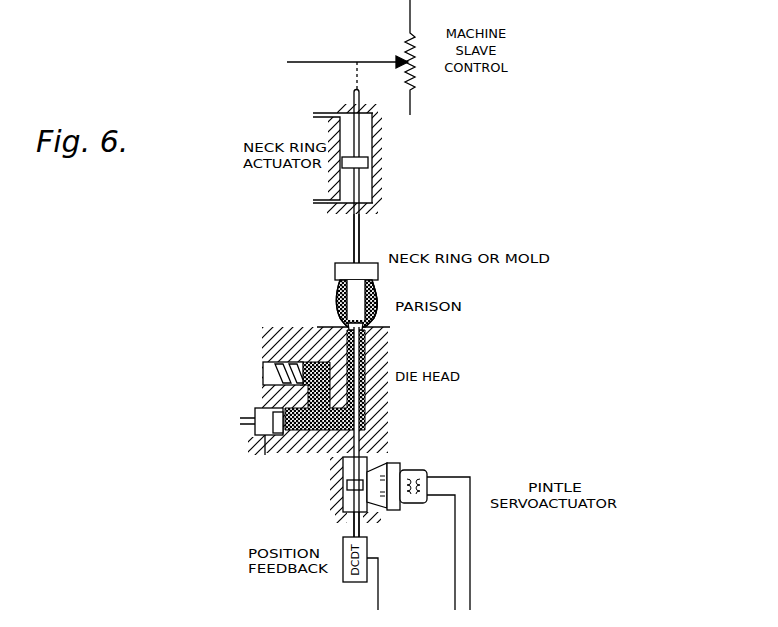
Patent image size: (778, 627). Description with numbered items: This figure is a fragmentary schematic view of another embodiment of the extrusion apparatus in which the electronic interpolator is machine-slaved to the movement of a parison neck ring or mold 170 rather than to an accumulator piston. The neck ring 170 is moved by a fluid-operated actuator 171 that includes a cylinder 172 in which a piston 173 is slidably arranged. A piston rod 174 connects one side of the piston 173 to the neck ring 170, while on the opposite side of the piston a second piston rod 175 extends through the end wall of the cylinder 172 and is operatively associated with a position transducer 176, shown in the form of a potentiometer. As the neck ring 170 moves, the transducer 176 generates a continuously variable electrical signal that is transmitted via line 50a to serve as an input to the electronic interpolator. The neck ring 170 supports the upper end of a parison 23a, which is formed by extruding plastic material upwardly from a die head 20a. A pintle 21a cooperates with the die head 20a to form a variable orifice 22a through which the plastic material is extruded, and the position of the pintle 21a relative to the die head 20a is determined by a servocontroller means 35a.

The position transducer 176 is at (395, 34).
The line 50a is at (302, 62).
The piston rod 175 is at (353, 97).
The cylinder 172 is at (376, 138).
The piston 173 is at (369, 162).
The fluid-operated actuator 171 is at (379, 207).
The piston rod 174 is at (354, 233).
The parison neck ring or mold 170 is at (336, 270).
The parison 23a is at (338, 305).
The variable orifice 22a is at (342, 328).
The die head 20a is at (390, 321).
The pintle 21a is at (379, 338).
The servocontroller means 35a is at (378, 446).